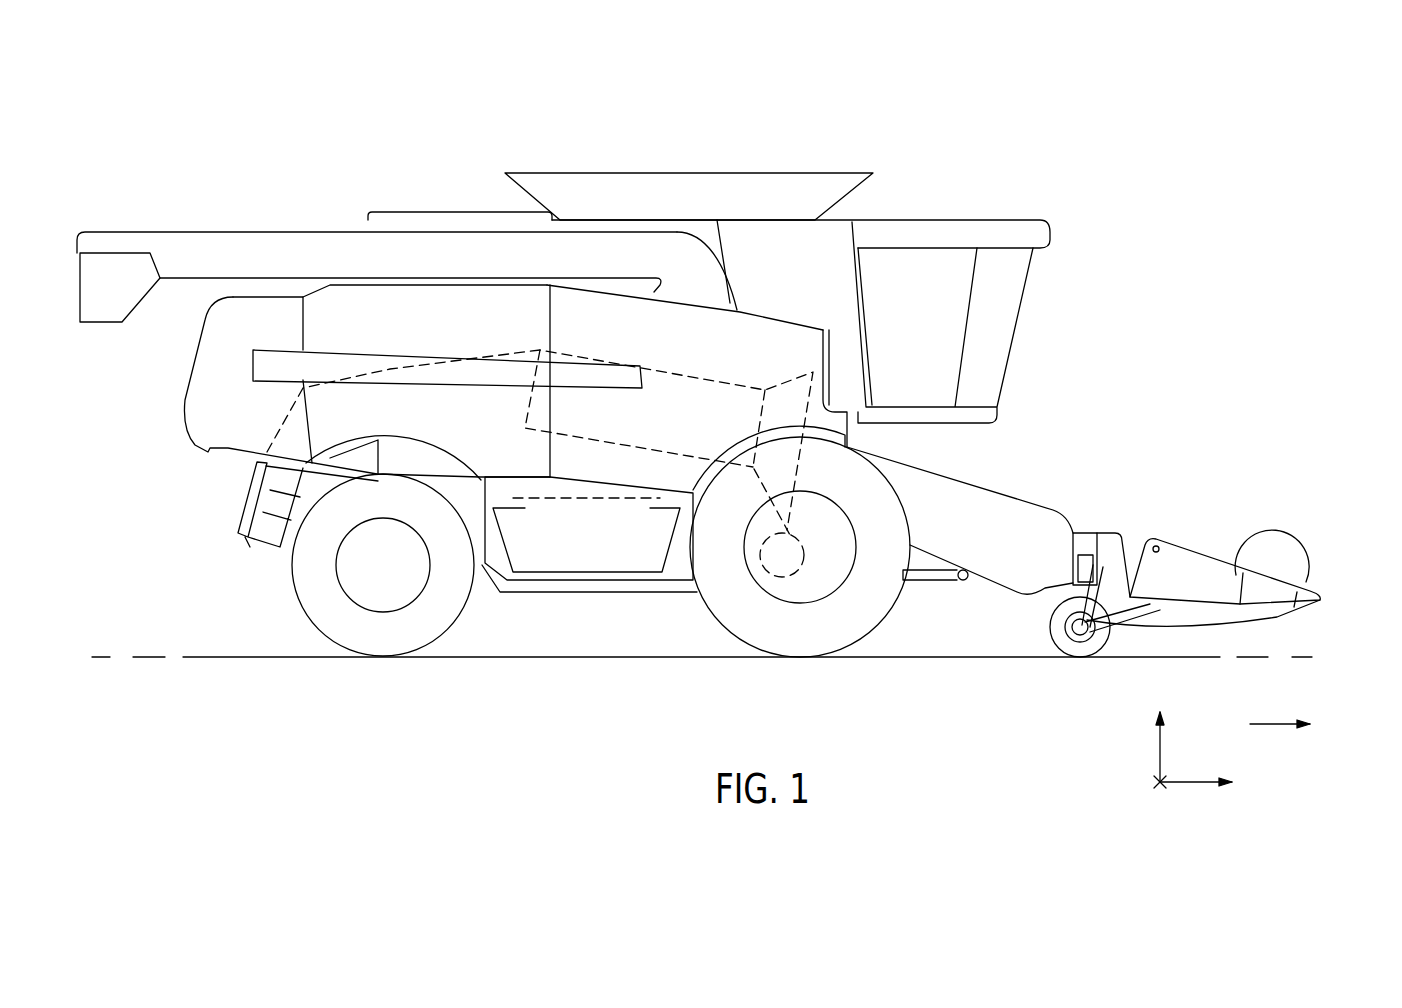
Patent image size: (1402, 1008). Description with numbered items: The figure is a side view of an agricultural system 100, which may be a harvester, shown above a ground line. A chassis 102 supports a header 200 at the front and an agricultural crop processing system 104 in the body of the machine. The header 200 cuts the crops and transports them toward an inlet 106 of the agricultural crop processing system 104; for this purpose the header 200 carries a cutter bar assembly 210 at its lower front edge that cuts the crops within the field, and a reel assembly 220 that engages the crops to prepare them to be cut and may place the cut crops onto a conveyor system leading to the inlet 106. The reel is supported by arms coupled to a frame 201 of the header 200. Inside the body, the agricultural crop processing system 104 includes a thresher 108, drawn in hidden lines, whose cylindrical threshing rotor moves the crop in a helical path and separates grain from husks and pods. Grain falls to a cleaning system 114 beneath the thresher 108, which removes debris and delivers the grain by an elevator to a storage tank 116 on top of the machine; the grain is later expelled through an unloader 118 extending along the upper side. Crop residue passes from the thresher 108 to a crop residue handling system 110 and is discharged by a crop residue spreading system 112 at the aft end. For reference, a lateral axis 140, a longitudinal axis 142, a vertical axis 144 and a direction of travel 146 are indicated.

The agricultural system 100 is at (1053, 131).
The chassis 102 is at (531, 594).
The agricultural crop processing system 104 is at (668, 348).
The inlet 106 is at (880, 462).
The thresher 108 is at (688, 374).
The crop residue handling system 110 is at (353, 346).
The crop residue spreading system 112 is at (243, 507).
The cleaning system 114 is at (583, 500).
The storage tank 116 is at (667, 190).
The unloader 118 is at (200, 222).
The lateral axis 140 is at (1152, 781).
The longitudinal axis 142 is at (1187, 783).
The vertical axis 144 is at (1160, 753).
The direction of travel 146 is at (1272, 724).
The header 200 is at (1192, 468).
The frame 201 is at (1113, 548).
The cutter bar assembly 210 is at (1303, 614).
The reel assembly 220 is at (1298, 527).